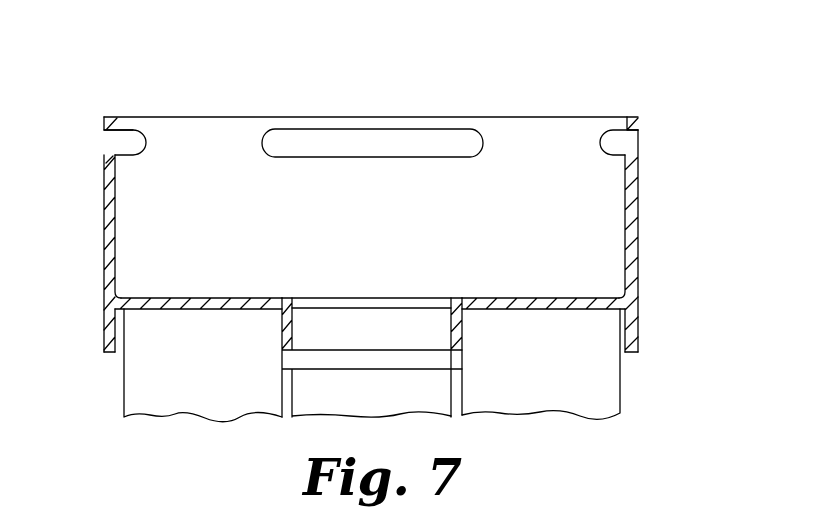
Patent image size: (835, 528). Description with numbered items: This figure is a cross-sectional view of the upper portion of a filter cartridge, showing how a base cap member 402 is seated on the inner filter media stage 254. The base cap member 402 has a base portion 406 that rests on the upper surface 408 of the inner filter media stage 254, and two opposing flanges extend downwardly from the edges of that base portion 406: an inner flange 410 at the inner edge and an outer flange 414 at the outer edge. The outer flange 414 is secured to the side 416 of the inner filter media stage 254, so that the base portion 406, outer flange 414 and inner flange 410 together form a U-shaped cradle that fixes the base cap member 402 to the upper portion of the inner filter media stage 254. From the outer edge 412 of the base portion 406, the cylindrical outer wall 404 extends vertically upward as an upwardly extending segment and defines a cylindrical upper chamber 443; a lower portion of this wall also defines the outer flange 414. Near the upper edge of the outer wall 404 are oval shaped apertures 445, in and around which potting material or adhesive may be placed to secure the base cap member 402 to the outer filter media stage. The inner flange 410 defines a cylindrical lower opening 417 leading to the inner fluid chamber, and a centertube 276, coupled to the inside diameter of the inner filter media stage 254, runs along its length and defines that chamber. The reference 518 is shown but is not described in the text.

The base cap member 402 is at (215, 132).
The cylindrical outer wall 404 is at (110, 217).
The base portion 406 is at (197, 303).
The upper surface of inner filter media stage 408 is at (542, 313).
The inner flange 410 is at (463, 330).
The outer edge of base portion 412 is at (642, 302).
The outer flange 414 is at (112, 313).
The side of inner filter media stage 416 is at (105, 347).
The lower opening 417 is at (423, 318).
The cylindrical upper chamber 443 is at (230, 187).
The oval shaped apertures 445 is at (370, 130).
The top wall 518 is at (530, 118).
The inner filter media stage 254 is at (540, 387).
The centertube 276 is at (310, 393).